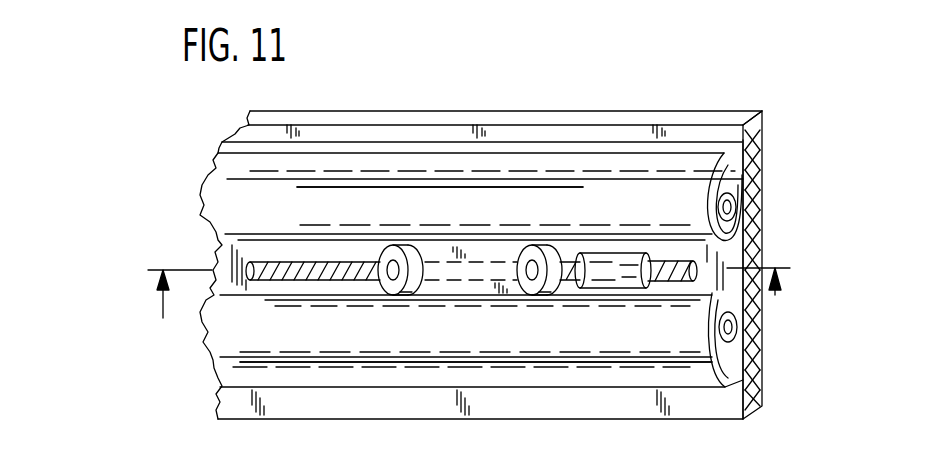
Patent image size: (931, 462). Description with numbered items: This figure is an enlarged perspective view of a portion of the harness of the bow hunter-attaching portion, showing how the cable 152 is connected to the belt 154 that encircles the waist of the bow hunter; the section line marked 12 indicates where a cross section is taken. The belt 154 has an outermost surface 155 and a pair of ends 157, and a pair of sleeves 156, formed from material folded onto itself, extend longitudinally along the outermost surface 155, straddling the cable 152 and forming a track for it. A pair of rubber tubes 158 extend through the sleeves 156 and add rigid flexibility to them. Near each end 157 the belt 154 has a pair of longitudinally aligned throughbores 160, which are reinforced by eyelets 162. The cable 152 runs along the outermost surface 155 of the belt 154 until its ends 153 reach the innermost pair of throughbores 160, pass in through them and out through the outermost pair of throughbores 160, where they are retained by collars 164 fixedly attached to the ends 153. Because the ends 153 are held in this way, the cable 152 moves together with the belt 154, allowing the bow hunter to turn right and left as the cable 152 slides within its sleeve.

The section line 12- 12 is at (476, 310).
The cable 152 is at (700, 268).
The ends of the cable 153 is at (684, 260).
The belt 154 is at (632, 118).
The outermost surface of the belt 155 is at (695, 403).
The sleeves 156 is at (448, 180).
The ends of the belt 157 is at (752, 147).
The rubber tubes 158 is at (733, 203).
The throughbores 160 is at (383, 250).
The eyelets 162 is at (391, 295).
The collars 164 is at (613, 258).